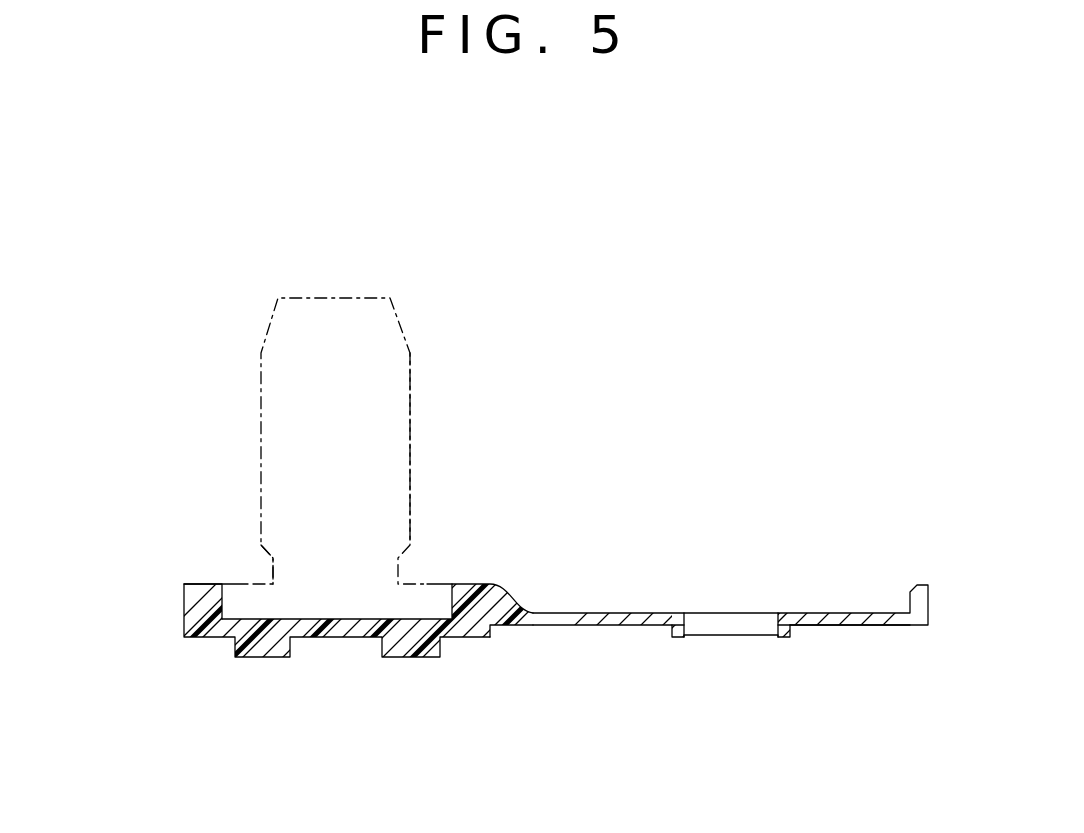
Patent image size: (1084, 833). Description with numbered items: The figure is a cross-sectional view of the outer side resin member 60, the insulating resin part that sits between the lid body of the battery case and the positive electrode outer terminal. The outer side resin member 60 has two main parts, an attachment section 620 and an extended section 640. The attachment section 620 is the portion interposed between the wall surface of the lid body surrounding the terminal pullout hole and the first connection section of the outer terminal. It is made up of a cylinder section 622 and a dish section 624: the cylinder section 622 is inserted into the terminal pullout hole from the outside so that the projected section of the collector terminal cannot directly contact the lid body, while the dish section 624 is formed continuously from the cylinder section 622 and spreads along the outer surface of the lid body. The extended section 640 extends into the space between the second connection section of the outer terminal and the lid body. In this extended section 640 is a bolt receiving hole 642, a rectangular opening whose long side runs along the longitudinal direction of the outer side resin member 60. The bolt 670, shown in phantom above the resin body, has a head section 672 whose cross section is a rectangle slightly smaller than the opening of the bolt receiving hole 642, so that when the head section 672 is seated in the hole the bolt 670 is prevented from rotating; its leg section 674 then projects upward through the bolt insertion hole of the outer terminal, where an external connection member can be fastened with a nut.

The outer side resin member 60 is at (546, 666).
The attachment section 620 is at (868, 727).
The cylinder section 622 is at (697, 637).
The dish section 624 is at (843, 628).
The extended section 640 is at (183, 632).
The bolt receiving hole 642 is at (452, 607).
The bolt 670 is at (268, 330).
The head section 672 is at (242, 582).
The leg section 674 is at (387, 402).